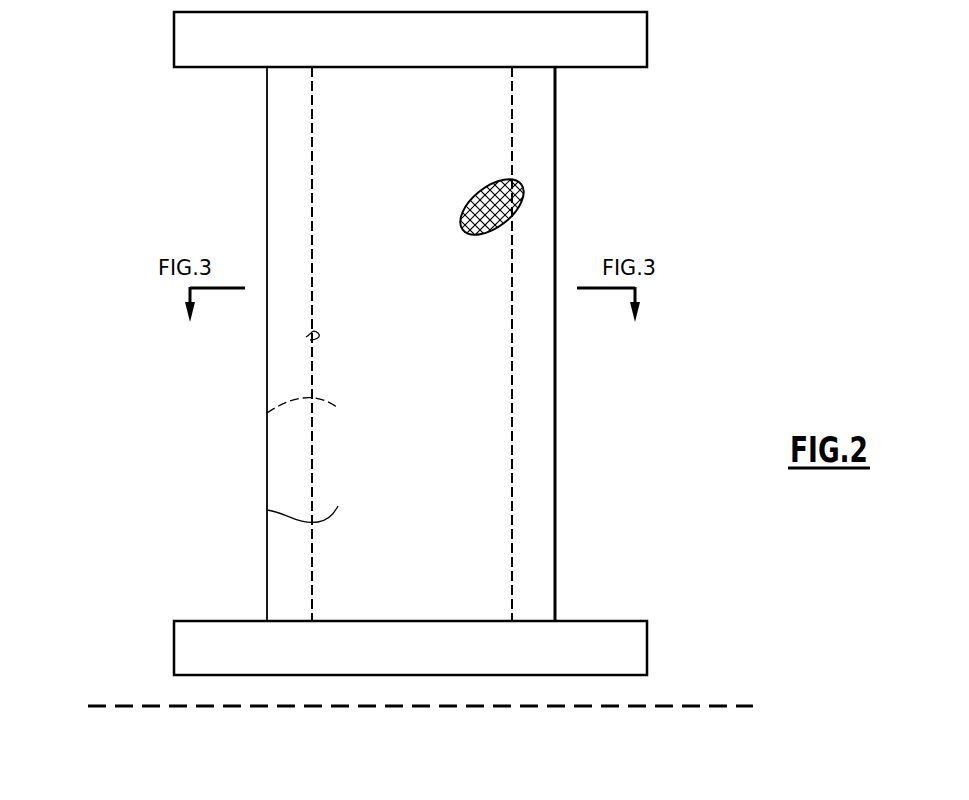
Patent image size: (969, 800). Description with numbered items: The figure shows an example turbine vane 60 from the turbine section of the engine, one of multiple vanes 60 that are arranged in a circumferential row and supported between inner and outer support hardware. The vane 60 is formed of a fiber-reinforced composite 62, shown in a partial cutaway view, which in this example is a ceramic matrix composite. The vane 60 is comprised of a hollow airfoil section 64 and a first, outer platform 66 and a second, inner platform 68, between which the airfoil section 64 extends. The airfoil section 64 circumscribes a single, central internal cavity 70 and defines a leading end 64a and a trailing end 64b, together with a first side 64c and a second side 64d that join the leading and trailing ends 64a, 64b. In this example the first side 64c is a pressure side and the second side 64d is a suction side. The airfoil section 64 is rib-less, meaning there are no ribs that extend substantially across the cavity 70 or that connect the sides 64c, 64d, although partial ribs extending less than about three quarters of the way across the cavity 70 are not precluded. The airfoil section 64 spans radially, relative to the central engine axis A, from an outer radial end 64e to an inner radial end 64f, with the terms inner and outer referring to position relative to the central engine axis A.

The turbine vane 60 is at (118, 465).
The fiber-reinforced composite 62 is at (524, 186).
The hollow airfoil section 64 is at (666, 67).
The leading end 64a is at (267, 228).
The trailing end 64b is at (555, 456).
The first side 64c is at (267, 510).
The second side 64d is at (267, 413).
The outer radial end 64e is at (286, 68).
The inner radial end 64f is at (293, 621).
The first platform 66 is at (622, 67).
The second platform 68 is at (604, 621).
The internal cavity 70 is at (306, 337).
The central engine axis A is at (720, 706).